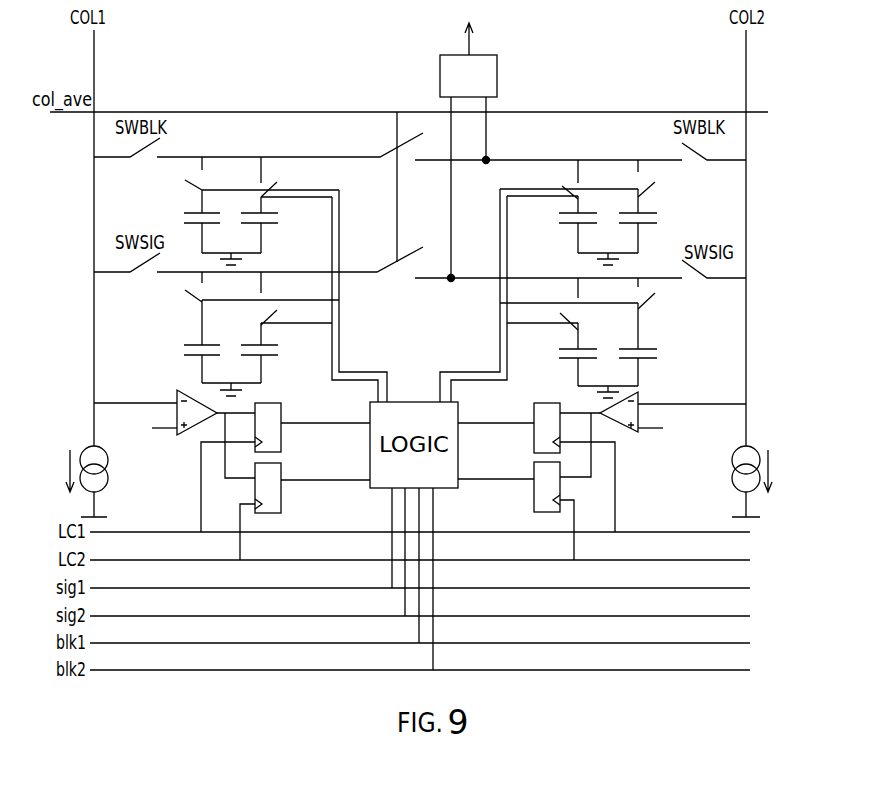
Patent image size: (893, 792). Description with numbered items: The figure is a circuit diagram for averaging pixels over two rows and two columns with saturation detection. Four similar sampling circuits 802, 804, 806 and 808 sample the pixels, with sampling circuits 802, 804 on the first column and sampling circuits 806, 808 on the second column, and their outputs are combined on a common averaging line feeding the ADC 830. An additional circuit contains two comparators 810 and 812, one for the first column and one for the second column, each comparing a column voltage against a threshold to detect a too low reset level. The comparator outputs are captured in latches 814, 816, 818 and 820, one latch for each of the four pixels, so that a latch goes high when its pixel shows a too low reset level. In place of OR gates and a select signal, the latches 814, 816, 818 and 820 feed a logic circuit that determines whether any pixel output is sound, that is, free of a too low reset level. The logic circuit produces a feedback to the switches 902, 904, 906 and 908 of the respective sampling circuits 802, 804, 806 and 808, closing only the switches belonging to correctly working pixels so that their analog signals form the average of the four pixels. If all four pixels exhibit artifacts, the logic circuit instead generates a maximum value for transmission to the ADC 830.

The sampling circuit 802 is at (150, 225).
The sampling circuit 804 is at (137, 344).
The sampling circuit 806 is at (703, 208).
The sampling circuit 808 is at (641, 332).
The comparator 810 is at (182, 437).
The comparator 812 is at (633, 437).
The latch 814 is at (282, 437).
The latch 816 is at (282, 490).
The latch 818 is at (547, 403).
The latch 820 is at (548, 512).
The ADC 830 is at (495, 53).
The switch 902 is at (196, 217).
The switch 904 is at (183, 356).
The switch 906 is at (646, 192).
The switch 908 is at (657, 357).